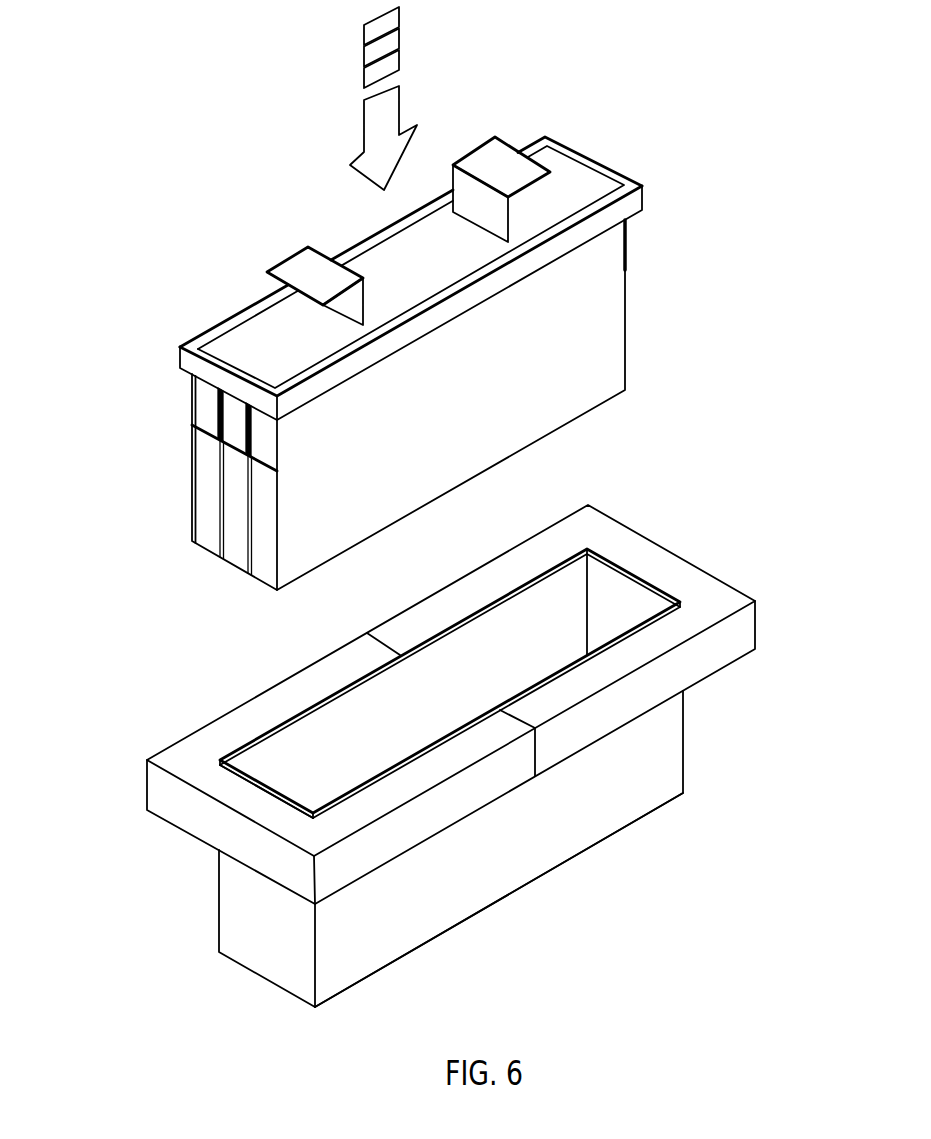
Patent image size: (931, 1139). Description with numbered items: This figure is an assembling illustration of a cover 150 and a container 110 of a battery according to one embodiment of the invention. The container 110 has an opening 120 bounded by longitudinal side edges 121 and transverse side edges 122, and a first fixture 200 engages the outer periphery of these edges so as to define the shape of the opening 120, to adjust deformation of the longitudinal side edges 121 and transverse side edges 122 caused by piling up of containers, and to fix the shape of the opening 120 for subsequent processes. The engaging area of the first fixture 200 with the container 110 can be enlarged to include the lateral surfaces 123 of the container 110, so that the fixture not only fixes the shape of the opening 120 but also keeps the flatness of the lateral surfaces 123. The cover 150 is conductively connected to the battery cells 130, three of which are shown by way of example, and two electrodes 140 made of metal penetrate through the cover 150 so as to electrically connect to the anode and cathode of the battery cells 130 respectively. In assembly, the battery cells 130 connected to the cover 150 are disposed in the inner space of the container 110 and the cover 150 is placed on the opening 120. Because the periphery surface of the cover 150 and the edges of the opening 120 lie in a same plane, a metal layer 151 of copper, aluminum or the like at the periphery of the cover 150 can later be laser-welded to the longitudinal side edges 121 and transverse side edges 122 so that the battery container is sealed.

The container 110 is at (264, 946).
The opening 120 is at (305, 744).
The longitudinal side edges 121 is at (514, 590).
The transverse side edges 122 is at (258, 786).
The lateral surfaces 123 is at (495, 875).
The battery cells 130 is at (267, 570).
The electrodes 140 is at (288, 264).
The cover 150 is at (572, 175).
The metal layer 151 is at (626, 183).
The first fixture 200 is at (453, 800).